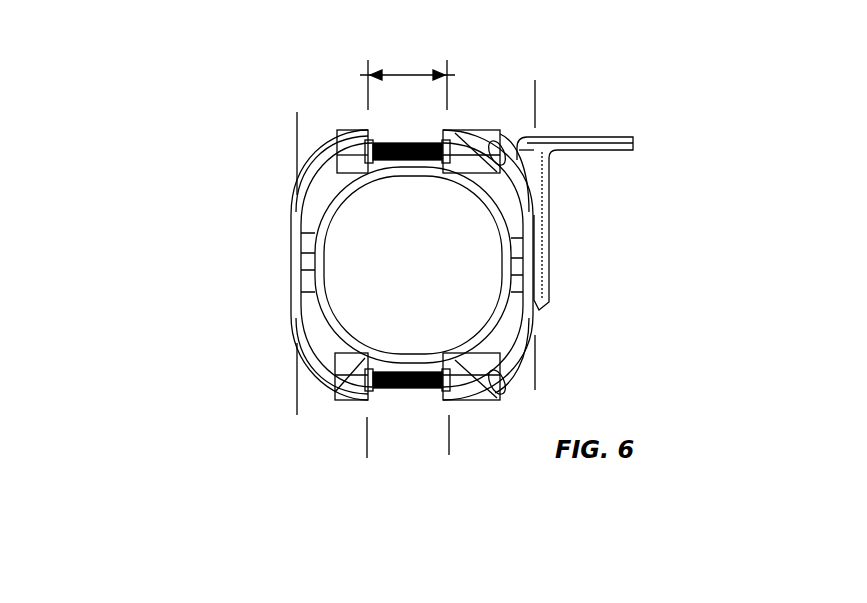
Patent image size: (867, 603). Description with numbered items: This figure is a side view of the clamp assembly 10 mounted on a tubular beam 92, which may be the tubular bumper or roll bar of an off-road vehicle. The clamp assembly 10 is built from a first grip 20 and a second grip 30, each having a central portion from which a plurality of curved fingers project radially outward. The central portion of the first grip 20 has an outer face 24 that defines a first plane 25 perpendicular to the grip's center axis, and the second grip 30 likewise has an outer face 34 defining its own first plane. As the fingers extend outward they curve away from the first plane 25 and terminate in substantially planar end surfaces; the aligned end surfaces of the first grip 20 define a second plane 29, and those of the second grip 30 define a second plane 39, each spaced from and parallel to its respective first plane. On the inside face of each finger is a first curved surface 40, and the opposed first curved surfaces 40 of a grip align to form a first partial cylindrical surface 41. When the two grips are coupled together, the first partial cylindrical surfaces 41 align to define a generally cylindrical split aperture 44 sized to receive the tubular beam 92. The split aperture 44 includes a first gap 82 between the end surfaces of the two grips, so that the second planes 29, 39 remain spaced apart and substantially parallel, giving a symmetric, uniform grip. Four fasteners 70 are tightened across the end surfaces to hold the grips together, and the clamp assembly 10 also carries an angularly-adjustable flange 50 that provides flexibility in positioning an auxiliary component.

The clamp assembly 10 is at (107, 135).
The first grip 20 is at (290, 325).
The outer face 24 is at (290, 267).
The first plane 25 is at (292, 132).
The second plane 29 is at (366, 78).
The second grip 30 is at (535, 322).
The outer face 34 is at (540, 103).
The second plane 39 is at (453, 78).
The first curved surface 40 is at (483, 200).
The first partial cylindrical surface 41 is at (355, 193).
The first generally cylindrical split aperture 44 is at (352, 250).
The angularly-adjustable flange 50 is at (595, 155).
The fasteners 70 is at (403, 390).
The first gap 82 is at (410, 73).
The tubular beam 92 is at (360, 347).